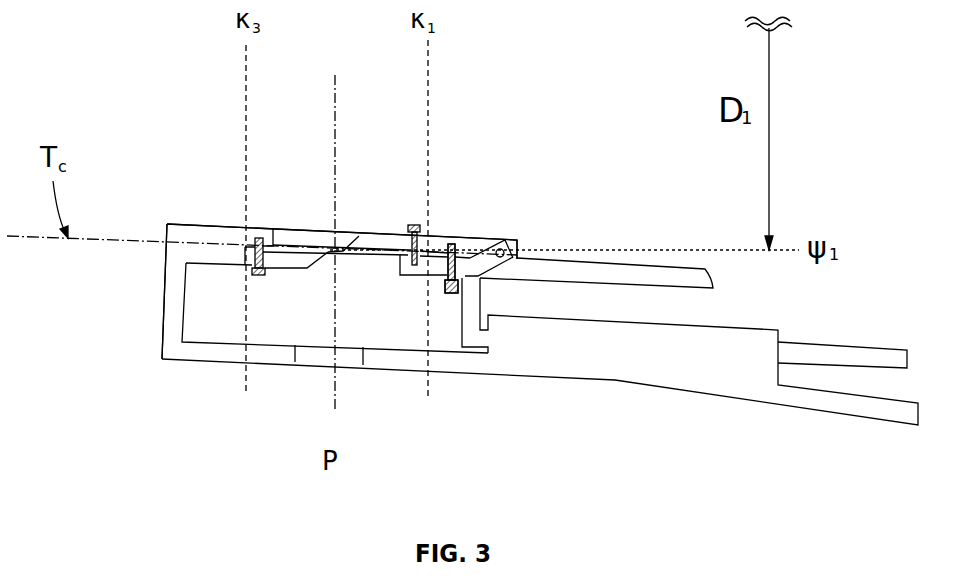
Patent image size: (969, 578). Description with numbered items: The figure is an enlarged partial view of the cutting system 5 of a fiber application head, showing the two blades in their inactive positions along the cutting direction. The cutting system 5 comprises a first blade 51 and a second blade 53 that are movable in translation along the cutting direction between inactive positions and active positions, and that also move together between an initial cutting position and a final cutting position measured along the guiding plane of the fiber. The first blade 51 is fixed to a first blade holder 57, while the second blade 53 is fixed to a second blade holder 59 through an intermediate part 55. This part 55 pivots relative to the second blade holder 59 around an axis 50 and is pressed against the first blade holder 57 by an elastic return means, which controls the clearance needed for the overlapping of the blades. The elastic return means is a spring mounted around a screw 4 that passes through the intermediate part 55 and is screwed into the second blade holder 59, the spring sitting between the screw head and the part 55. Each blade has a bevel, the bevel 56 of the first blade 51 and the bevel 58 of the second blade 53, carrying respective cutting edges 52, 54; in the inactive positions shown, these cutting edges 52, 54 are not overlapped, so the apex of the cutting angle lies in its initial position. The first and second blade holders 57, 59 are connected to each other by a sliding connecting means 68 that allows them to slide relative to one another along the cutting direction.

The screw 4 is at (456, 293).
The cutting system 5 is at (161, 226).
The axis 50 is at (505, 240).
The first blade 51 is at (287, 263).
The cutting edge 52 is at (334, 257).
The second blade 53 is at (392, 235).
The cutting edge 54 is at (337, 247).
The part 55 is at (463, 250).
The bevel 56 is at (322, 259).
The first blade holder 57 is at (183, 355).
The bevel 58 is at (347, 238).
The second blade holder 59 is at (635, 272).
The sliding connecting means 68 is at (591, 357).